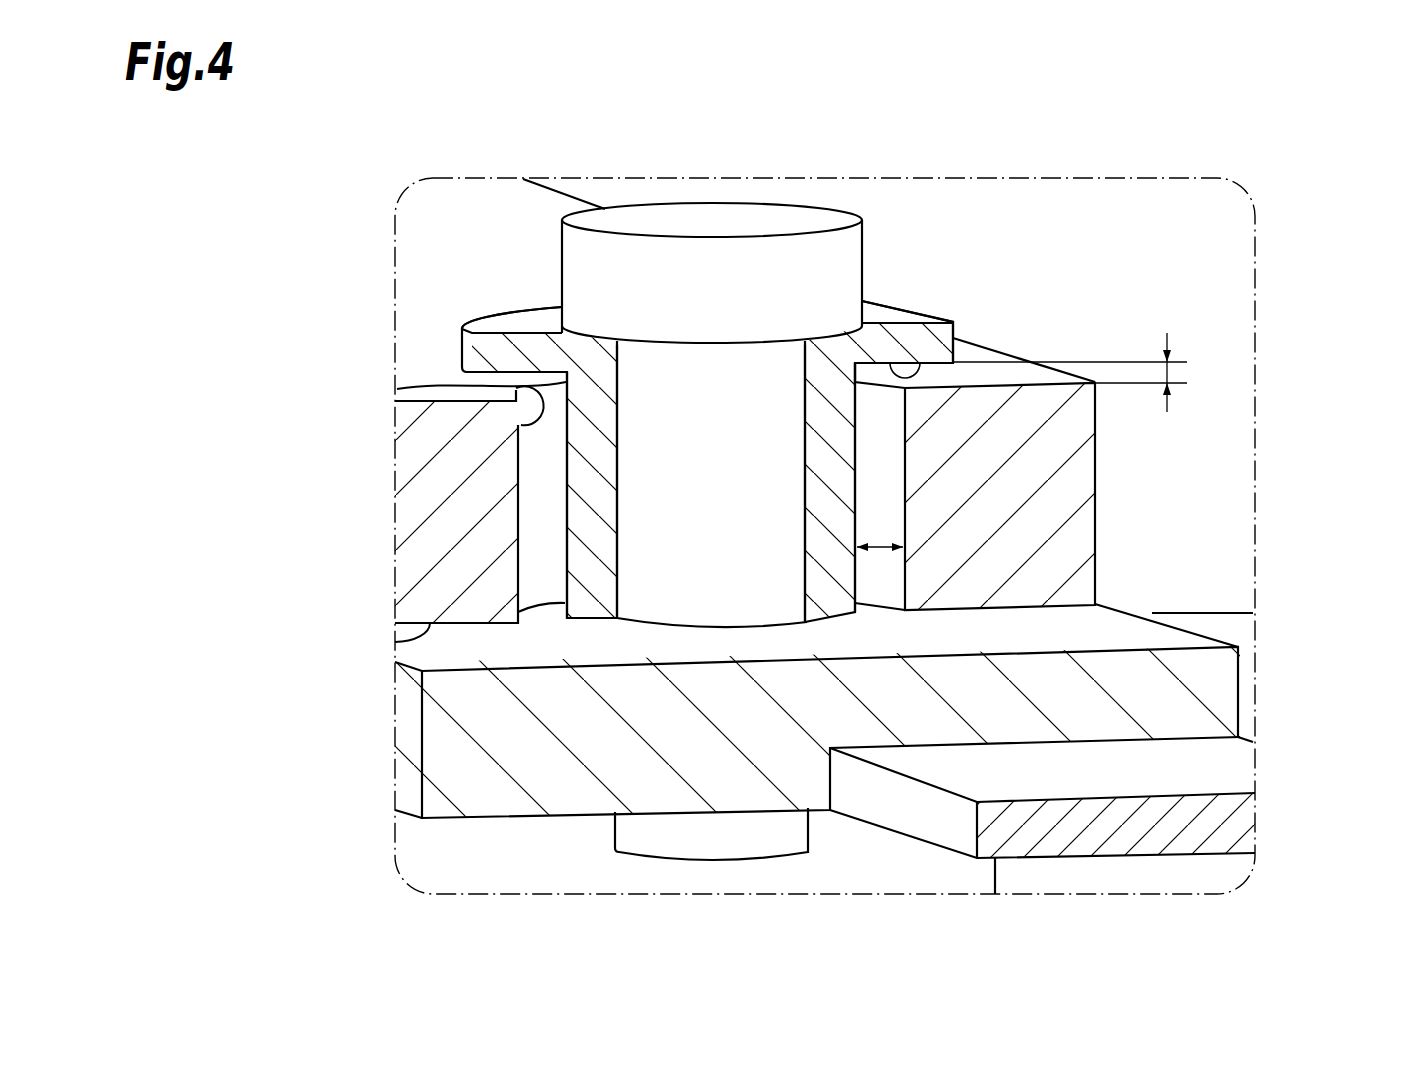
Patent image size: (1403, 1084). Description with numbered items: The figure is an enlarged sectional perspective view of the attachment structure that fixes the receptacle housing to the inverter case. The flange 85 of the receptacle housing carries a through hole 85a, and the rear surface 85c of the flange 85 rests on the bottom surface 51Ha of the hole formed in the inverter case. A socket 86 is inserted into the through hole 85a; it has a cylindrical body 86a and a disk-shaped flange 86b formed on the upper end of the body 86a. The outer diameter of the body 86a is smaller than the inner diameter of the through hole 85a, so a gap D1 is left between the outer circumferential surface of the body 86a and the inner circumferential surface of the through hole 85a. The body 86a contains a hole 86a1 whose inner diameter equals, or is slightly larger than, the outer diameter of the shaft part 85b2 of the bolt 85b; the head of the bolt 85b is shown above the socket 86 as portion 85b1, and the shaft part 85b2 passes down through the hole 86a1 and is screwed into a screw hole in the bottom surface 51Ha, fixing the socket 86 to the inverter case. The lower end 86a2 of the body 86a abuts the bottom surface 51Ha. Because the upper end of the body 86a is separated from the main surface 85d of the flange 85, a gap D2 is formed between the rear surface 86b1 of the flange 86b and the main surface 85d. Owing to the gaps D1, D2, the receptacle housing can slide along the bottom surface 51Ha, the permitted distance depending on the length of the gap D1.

The flange 85 is at (1097, 567).
The through hole 85a is at (460, 386).
The bolt 85b is at (717, 538).
The head portion of shaft 85b1 is at (710, 207).
The shaft part 85b2 is at (711, 862).
The rear surface 85c is at (395, 640).
The main surface 85d is at (983, 356).
The socket 86 is at (509, 303).
The body 86a is at (565, 538).
The hole 86a1 is at (625, 509).
The lower end 86a2 is at (593, 623).
The flange 86b is at (972, 322).
The rear surface 86b1 is at (910, 378).
The bottom surface 51Ha is at (1125, 628).
The gap D1 is at (880, 541).
The gap D2 is at (1170, 373).